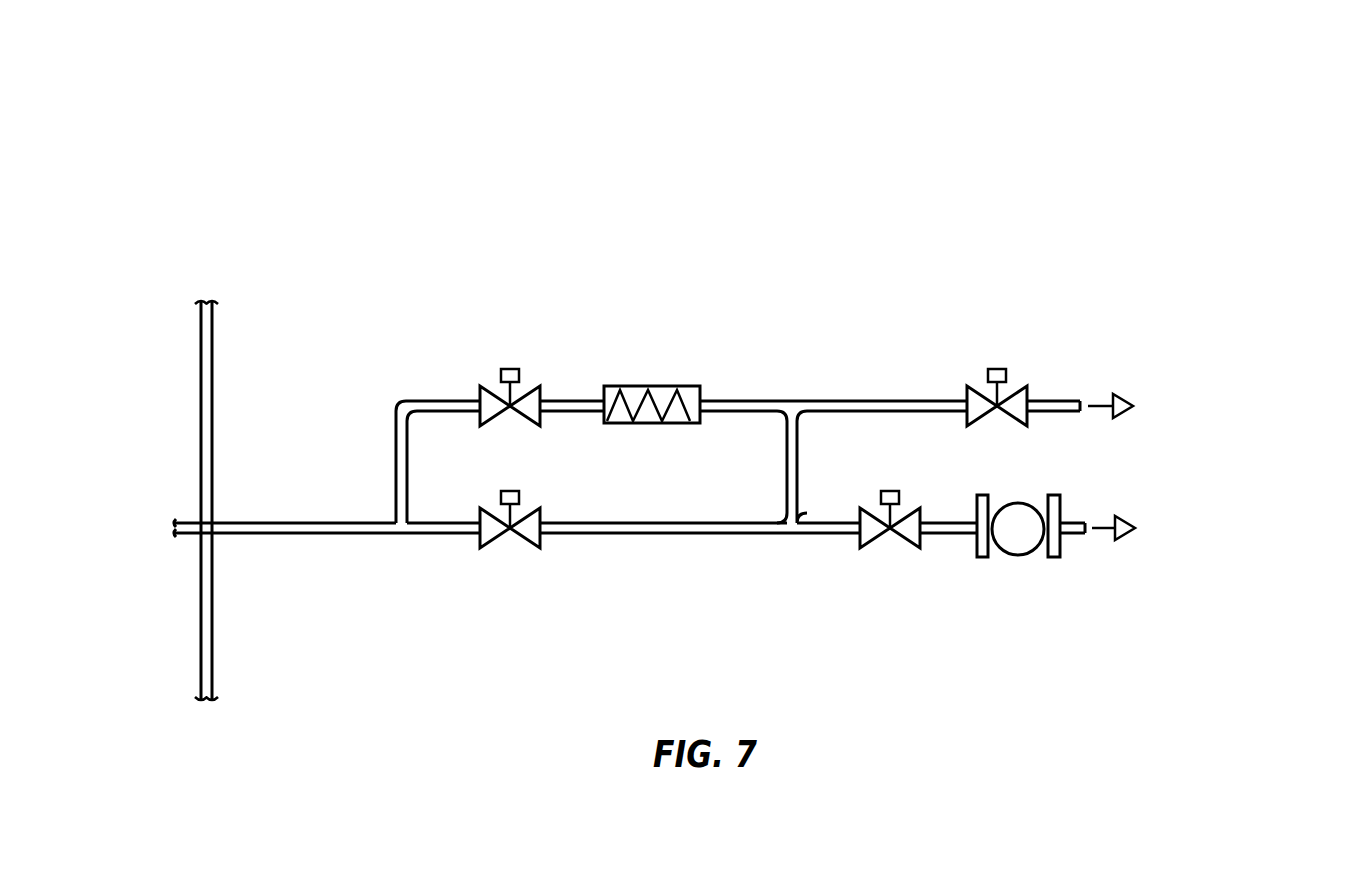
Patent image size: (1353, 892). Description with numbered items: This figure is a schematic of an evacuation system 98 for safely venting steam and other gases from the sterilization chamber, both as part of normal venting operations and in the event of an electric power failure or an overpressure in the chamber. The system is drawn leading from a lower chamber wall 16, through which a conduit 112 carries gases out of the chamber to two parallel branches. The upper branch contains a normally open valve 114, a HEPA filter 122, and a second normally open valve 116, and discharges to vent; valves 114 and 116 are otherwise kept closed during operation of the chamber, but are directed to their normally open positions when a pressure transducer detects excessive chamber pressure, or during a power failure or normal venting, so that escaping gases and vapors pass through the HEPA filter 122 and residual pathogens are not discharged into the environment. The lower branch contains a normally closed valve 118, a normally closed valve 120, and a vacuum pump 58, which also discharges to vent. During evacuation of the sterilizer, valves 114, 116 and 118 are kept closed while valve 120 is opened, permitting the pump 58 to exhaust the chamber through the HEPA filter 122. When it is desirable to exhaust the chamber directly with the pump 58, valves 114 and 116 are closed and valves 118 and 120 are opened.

The evacuation system 98 is at (810, 178).
The lower chamber wall 16 is at (217, 345).
The conduit 112 is at (273, 535).
The valve 114 is at (532, 427).
The valve 116 is at (1005, 428).
The valve 118 is at (572, 490).
The valve 120 is at (921, 510).
The HEPA filter 122 is at (678, 386).
The pump 58 is at (1037, 558).